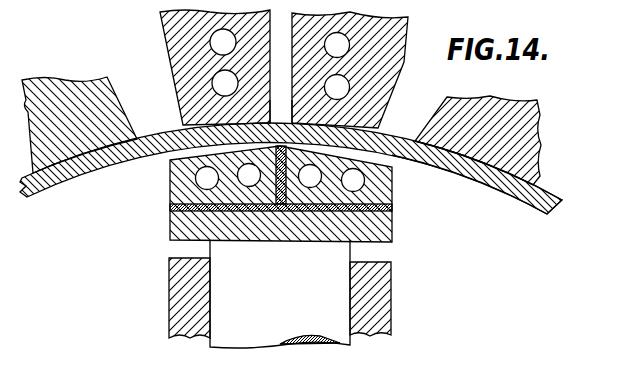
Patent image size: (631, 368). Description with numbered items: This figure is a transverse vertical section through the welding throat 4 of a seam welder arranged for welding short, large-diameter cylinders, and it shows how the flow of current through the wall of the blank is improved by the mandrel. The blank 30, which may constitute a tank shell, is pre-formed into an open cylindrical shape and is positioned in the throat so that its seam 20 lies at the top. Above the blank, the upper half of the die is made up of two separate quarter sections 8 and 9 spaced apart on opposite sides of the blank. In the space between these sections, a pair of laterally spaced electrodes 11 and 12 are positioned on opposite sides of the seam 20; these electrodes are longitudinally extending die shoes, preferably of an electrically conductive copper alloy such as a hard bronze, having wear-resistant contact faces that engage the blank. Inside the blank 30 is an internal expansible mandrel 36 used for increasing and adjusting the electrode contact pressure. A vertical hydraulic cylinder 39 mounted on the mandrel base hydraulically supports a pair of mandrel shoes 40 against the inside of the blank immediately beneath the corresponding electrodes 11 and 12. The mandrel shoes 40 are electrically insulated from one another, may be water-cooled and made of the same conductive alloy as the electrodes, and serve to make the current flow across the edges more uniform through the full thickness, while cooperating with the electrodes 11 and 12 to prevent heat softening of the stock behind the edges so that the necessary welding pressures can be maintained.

The welding throat 4 is at (502, 170).
The quarter section 8 is at (60, 76).
The quarter section 9 is at (540, 122).
The electrode 11 is at (152, 25).
The electrode 12 is at (392, 79).
The seam 20 is at (282, 122).
The blank 30 is at (95, 173).
The internal expansible mandrel 36 is at (160, 295).
The vertical hydraulic cylinder 39 is at (374, 311).
The mandrel shoes 40 is at (176, 183).